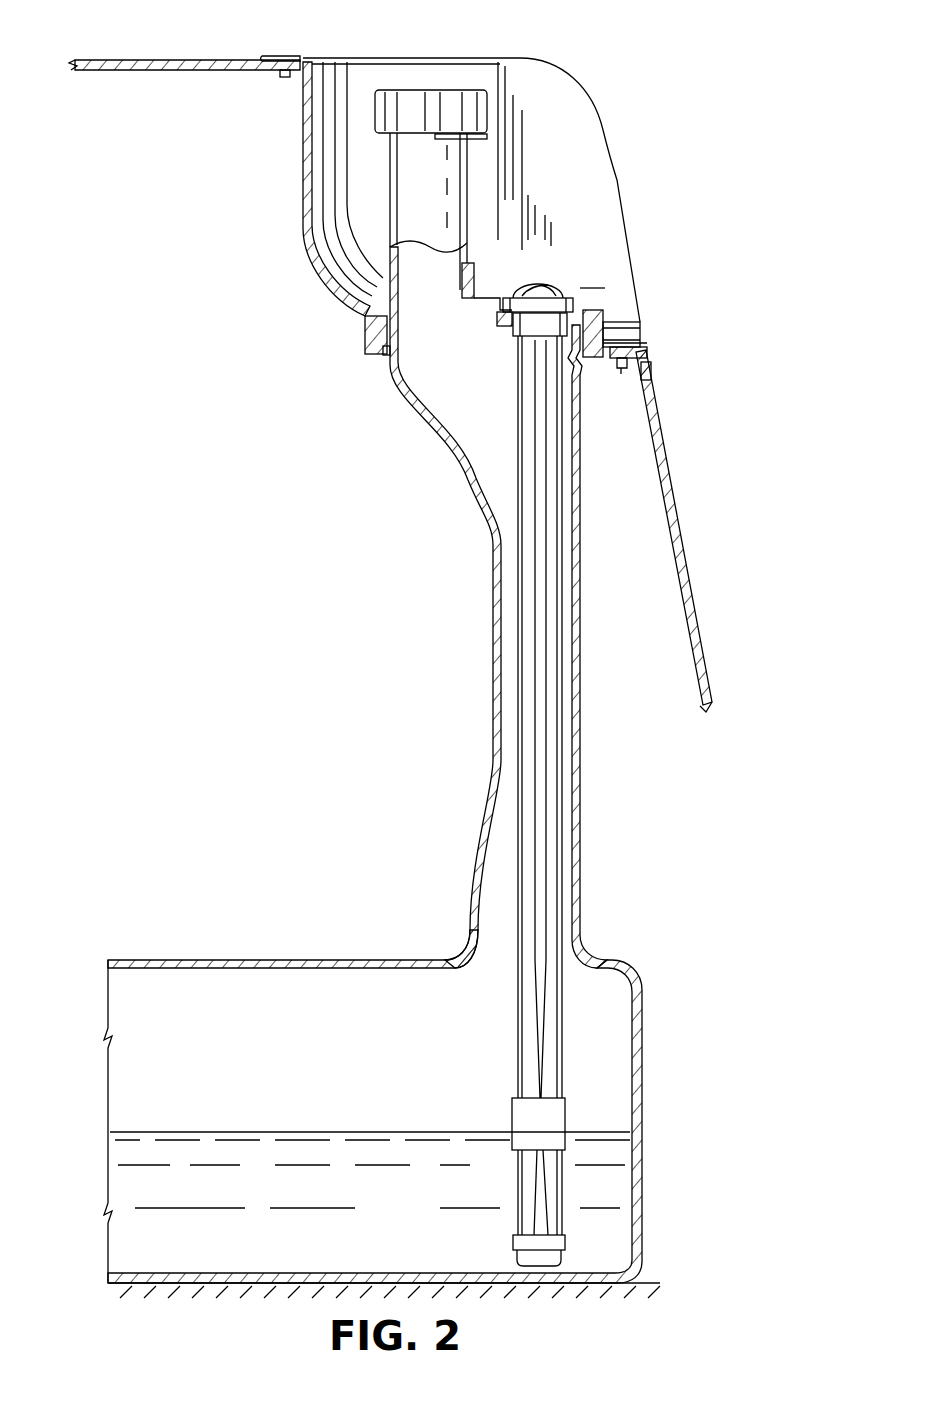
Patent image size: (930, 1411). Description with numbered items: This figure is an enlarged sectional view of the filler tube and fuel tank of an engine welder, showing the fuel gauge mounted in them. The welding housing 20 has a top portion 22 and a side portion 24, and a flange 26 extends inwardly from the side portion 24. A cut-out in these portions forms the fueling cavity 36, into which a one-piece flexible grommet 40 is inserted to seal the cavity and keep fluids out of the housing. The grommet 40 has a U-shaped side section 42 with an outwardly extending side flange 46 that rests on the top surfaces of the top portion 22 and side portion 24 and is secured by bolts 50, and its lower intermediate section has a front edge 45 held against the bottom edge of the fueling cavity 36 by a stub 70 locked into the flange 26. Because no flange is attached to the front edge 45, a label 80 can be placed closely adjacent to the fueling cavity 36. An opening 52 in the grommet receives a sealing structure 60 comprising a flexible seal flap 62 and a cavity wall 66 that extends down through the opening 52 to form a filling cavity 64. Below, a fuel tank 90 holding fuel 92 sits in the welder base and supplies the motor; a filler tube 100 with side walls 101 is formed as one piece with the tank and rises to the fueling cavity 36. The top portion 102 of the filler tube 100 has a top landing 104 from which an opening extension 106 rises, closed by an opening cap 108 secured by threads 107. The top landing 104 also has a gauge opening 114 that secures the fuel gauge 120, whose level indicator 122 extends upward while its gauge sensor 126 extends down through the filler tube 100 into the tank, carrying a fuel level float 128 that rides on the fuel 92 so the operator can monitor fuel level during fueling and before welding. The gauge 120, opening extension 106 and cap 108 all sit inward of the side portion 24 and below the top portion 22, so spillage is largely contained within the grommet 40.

The welding housing 20 is at (118, 50).
The top portion 22 is at (152, 60).
The side portion 24 is at (679, 555).
The flange 26 is at (640, 345).
The fueling cavity 36 is at (307, 62).
The grommet 40 is at (600, 128).
The side section 42 is at (303, 172).
The front edge 45 is at (644, 350).
The side flange 46 is at (270, 56).
The bolt 50 is at (285, 74).
The opening 52 is at (383, 352).
The sealing structure 60 is at (612, 323).
The seal flap 62 is at (377, 287).
The filling cavity 64 is at (603, 323).
The cavity wall 66 is at (365, 342).
The stub 70 is at (621, 374).
The label 80 is at (652, 370).
The fuel tank 90 is at (645, 1043).
The fuel 92 is at (263, 1152).
The filler tube 100 is at (493, 678).
The side walls 101 is at (580, 608).
The top portion 102 is at (420, 388).
The top landing 104 is at (476, 285).
The opening extension 106 is at (465, 198).
The threads 107 is at (468, 137).
The opening cap 108 is at (452, 98).
The gauge opening 114 is at (500, 320).
The fuel gauge 120 is at (513, 338).
The level indicator 122 is at (545, 290).
The gauge sensor 126 is at (543, 697).
The fuel level float 128 is at (522, 1113).